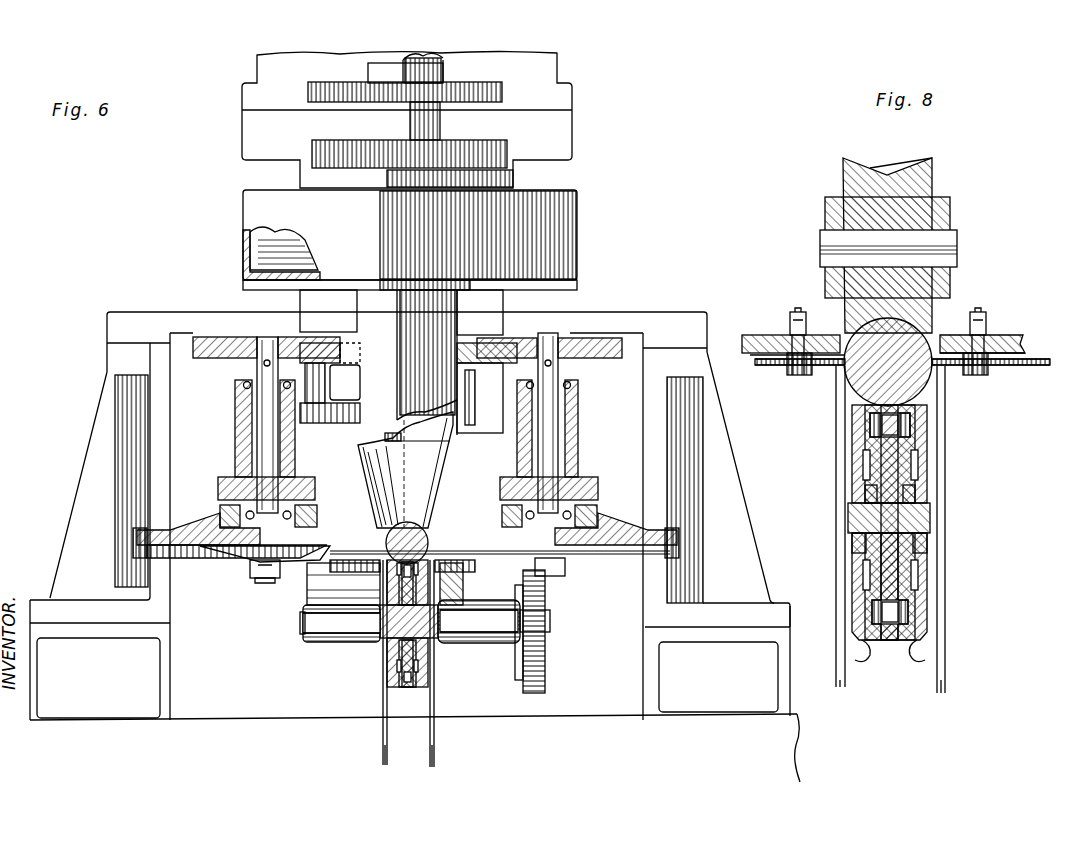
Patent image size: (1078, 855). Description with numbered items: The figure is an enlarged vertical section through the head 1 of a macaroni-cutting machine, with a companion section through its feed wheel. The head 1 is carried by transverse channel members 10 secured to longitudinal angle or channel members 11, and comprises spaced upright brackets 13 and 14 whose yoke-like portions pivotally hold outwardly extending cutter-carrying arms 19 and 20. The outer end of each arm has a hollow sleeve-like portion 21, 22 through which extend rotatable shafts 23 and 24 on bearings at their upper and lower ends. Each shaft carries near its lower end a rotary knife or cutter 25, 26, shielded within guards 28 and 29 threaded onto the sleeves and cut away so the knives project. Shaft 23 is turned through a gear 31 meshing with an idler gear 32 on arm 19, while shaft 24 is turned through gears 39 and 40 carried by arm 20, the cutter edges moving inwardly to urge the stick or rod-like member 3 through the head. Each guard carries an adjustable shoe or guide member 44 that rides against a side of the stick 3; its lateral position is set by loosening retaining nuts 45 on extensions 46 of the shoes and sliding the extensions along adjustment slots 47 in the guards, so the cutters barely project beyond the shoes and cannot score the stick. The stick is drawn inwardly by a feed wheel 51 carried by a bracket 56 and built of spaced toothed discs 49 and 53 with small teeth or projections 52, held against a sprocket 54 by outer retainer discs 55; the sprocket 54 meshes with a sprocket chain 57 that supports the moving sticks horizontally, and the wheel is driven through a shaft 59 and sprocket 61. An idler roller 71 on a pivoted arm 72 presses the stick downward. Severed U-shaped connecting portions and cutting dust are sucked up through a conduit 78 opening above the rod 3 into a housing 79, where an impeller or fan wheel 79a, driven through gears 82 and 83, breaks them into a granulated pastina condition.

In FIG. 6, the head 1 is at (232, 225).
In FIG. 6, the rod-like member 3 is at (412, 520).
In FIG. 8, the rod-like member 3 is at (938, 395).
In FIG. 6, the transverse channel members 10 is at (172, 677).
In FIG. 8, the transverse channel members 10 is at (792, 708).
In FIG. 6, the longitudinal angle or channel members 11 is at (798, 757).
In FIG. 6, the upright bracket 13 is at (720, 513).
In FIG. 6, the upright bracket 14 is at (90, 468).
In FIG. 6, the cutter-carrying arm 19 is at (487, 399).
In FIG. 6, the cutter-carrying arm 20 is at (355, 430).
In FIG. 6, the hollow sleeve-like portion 21 is at (582, 440).
In FIG. 6, the hollow sleeve-like portion 22 is at (238, 412).
In FIG. 6, the rotatable shaft 23 is at (555, 415).
In FIG. 6, the rotatable shaft 24 is at (262, 432).
In FIG. 6, the rotary knife or cutter 25 is at (640, 560).
In FIG. 8, the rotary knife or cutter 25 is at (1040, 370).
In FIG. 8, the rotary knife or cutter 26 is at (770, 372).
In FIG. 6, the guard 28 is at (610, 522).
In FIG. 8, the guard 28 is at (1028, 348).
In FIG. 6, the guard 29 is at (185, 522).
In FIG. 8, the guard 29 is at (783, 366).
In FIG. 6, the gear 31 is at (600, 338).
In FIG. 6, the idler gear 32 is at (462, 335).
In FIG. 6, the gear 39 is at (358, 338).
In FIG. 6, the gear 40 is at (225, 335).
In FIG. 6, the shoe or guide member 44 is at (330, 572).
In FIG. 8, the shoe or guide member 44 is at (832, 378).
In FIG. 8, the retaining nut 45 is at (790, 318).
In FIG. 8, the extension 46 is at (798, 310).
In FIG. 8, the adjustment slot 47 is at (758, 336).
In FIG. 8, the disc 49 is at (915, 578).
In FIG. 6, the feed wheel 51 is at (376, 683).
In FIG. 8, the feed wheel 51 is at (954, 496).
In FIG. 6, the teeth or projections 52 is at (392, 690).
In FIG. 8, the teeth or projections 52 is at (845, 655).
In FIG. 6, the disc 53 is at (407, 662).
In FIG. 8, the disc 53 is at (870, 573).
In FIG. 8, the sprocket 54 is at (905, 548).
In FIG. 8, the outer retainer disc 55 is at (852, 650).
In FIG. 6, the bracket 56 is at (284, 595).
In FIG. 6, the sprocket chain 57 is at (407, 582).
In FIG. 8, the sprocket chain 57 is at (855, 440).
In FIG. 6, the shaft 59 is at (355, 640).
In FIG. 8, the shaft 59 is at (915, 518).
In FIG. 6, the sprocket 61 is at (547, 676).
In FIG. 8, the idler roller 71 is at (925, 172).
In FIG. 8, the pivoted arm 72 is at (952, 212).
In FIG. 6, the conduit 78 is at (360, 310).
In FIG. 6, the housing 79 is at (578, 216).
In FIG. 6, the impeller or fan wheel 79a is at (262, 257).
In FIG. 6, the gear 82 is at (440, 92).
In FIG. 6, the gear 83 is at (495, 88).